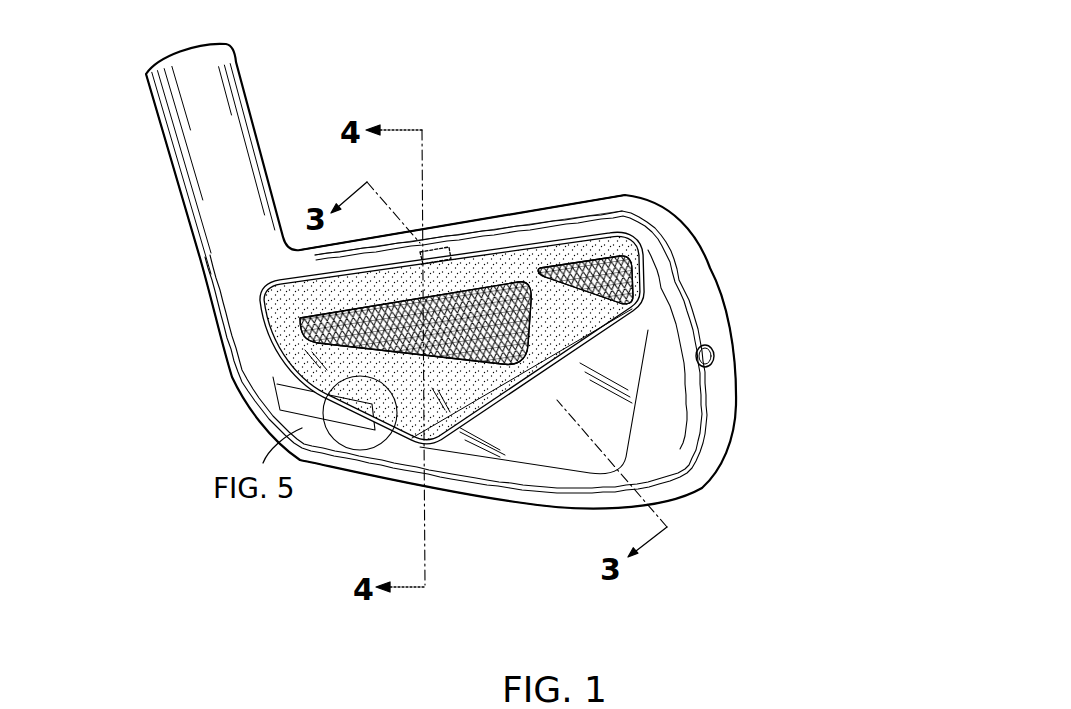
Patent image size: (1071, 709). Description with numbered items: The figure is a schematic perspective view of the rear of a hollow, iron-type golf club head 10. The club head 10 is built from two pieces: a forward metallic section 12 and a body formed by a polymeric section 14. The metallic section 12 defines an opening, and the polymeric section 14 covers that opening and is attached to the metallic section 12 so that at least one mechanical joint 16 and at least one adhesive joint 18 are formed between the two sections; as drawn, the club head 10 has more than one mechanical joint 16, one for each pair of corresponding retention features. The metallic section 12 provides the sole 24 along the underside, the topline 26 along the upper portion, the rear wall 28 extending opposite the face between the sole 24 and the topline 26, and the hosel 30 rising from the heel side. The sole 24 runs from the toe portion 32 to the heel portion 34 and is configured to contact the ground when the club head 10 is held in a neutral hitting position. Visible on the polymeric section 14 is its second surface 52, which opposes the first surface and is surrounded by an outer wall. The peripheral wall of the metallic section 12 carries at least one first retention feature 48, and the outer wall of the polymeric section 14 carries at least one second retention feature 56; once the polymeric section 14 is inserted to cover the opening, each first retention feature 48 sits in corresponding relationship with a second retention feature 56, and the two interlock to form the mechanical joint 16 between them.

The golf club head 10 is at (655, 98).
The metallic section 12 is at (720, 420).
The polymeric section 14 is at (494, 276).
The mechanical joint 16 is at (445, 235).
The adhesive joint 18 is at (435, 226).
The sole 24 is at (567, 512).
The topline 26 is at (553, 208).
The rear wall 28 is at (700, 490).
The hosel 30 is at (212, 228).
The toe portion 32 is at (722, 396).
The heel portion 34 is at (228, 373).
The first retention feature 48 is at (368, 244).
The second surface 52 is at (547, 316).
The second retention feature 56 is at (461, 244).